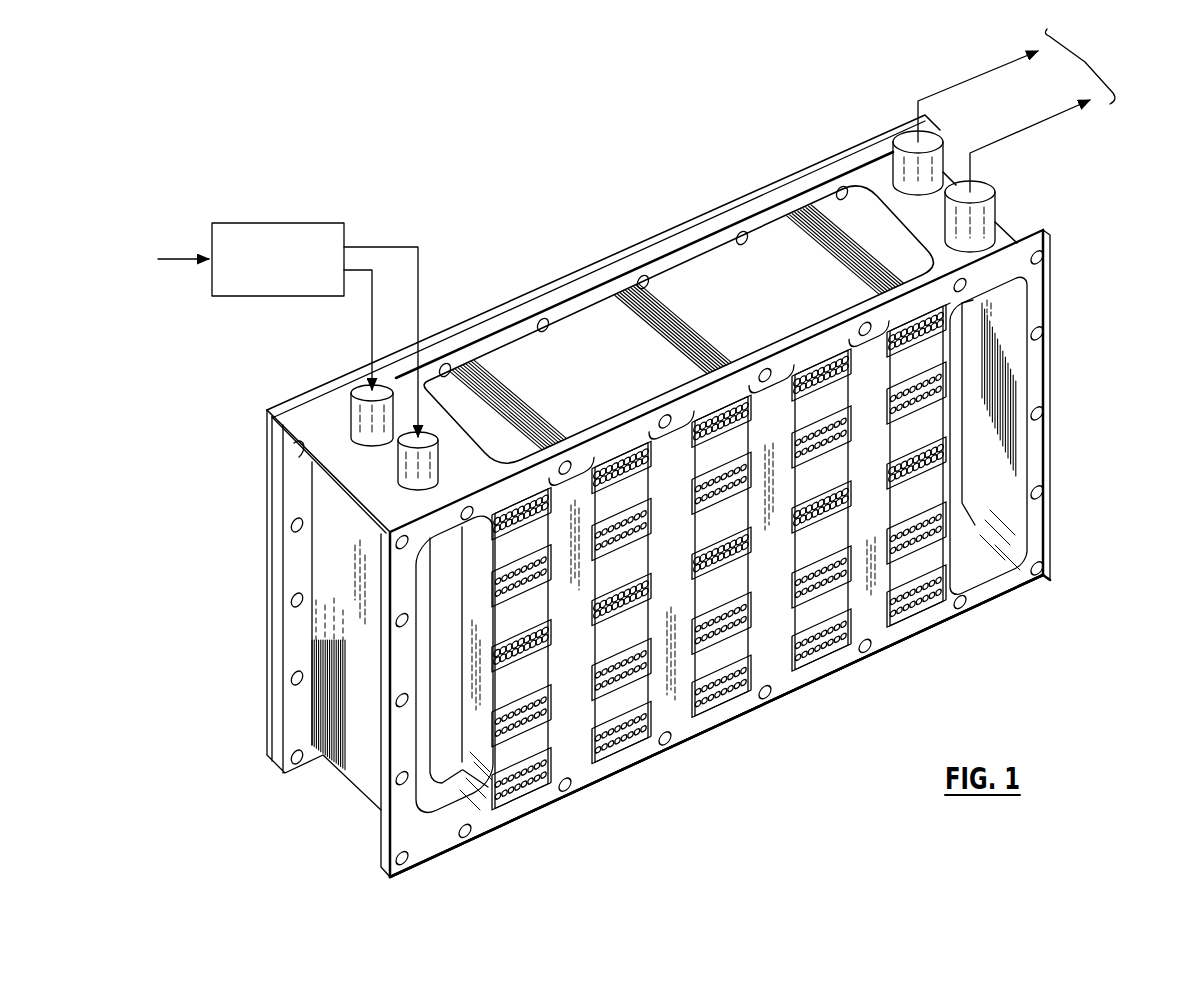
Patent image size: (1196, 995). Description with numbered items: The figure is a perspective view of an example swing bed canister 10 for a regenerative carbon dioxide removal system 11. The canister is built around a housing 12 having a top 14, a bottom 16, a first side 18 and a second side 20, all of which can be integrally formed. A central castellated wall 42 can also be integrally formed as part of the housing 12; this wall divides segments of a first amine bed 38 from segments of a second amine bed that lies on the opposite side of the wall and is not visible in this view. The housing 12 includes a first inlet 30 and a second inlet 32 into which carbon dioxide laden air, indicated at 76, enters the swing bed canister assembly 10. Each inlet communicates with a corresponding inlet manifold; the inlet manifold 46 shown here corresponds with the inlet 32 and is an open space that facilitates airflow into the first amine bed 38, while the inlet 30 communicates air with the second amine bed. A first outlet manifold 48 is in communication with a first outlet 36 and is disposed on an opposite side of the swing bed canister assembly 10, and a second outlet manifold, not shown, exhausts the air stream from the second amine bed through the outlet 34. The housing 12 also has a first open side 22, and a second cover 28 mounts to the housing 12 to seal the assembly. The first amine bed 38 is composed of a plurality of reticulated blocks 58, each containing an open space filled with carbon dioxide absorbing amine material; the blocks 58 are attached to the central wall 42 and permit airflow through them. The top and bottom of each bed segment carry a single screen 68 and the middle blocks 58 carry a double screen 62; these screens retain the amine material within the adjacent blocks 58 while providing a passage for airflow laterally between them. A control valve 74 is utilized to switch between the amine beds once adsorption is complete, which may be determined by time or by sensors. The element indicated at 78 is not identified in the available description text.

The swing bed canister 10 is at (1092, 188).
The carbon dioxide removal system 11 is at (306, 181).
The housing 12 is at (1050, 373).
The top 14 is at (728, 283).
The bottom 16 is at (596, 790).
The first side 18 is at (352, 616).
The second side 20 is at (1052, 261).
The first open side 22 is at (1052, 592).
The second cover 28 is at (754, 205).
The first inlet 30 is at (357, 386).
The second inlet 32 is at (405, 447).
The outlet 34 is at (934, 137).
The first outlet 36 is at (986, 188).
The first amine bed 38 is at (792, 742).
The central castellated wall 42 is at (768, 645).
The inlet manifold 46 is at (448, 808).
The first outlet manifold 48 is at (993, 437).
The reticulated block 58 is at (525, 611).
The double screen 62 is at (842, 438).
The single screen 68 is at (945, 325).
The control valve 74 is at (263, 277).
The carbon dioxide laden air 76 is at (434, 281).
The exhaust conduits 78 is at (1085, 62).